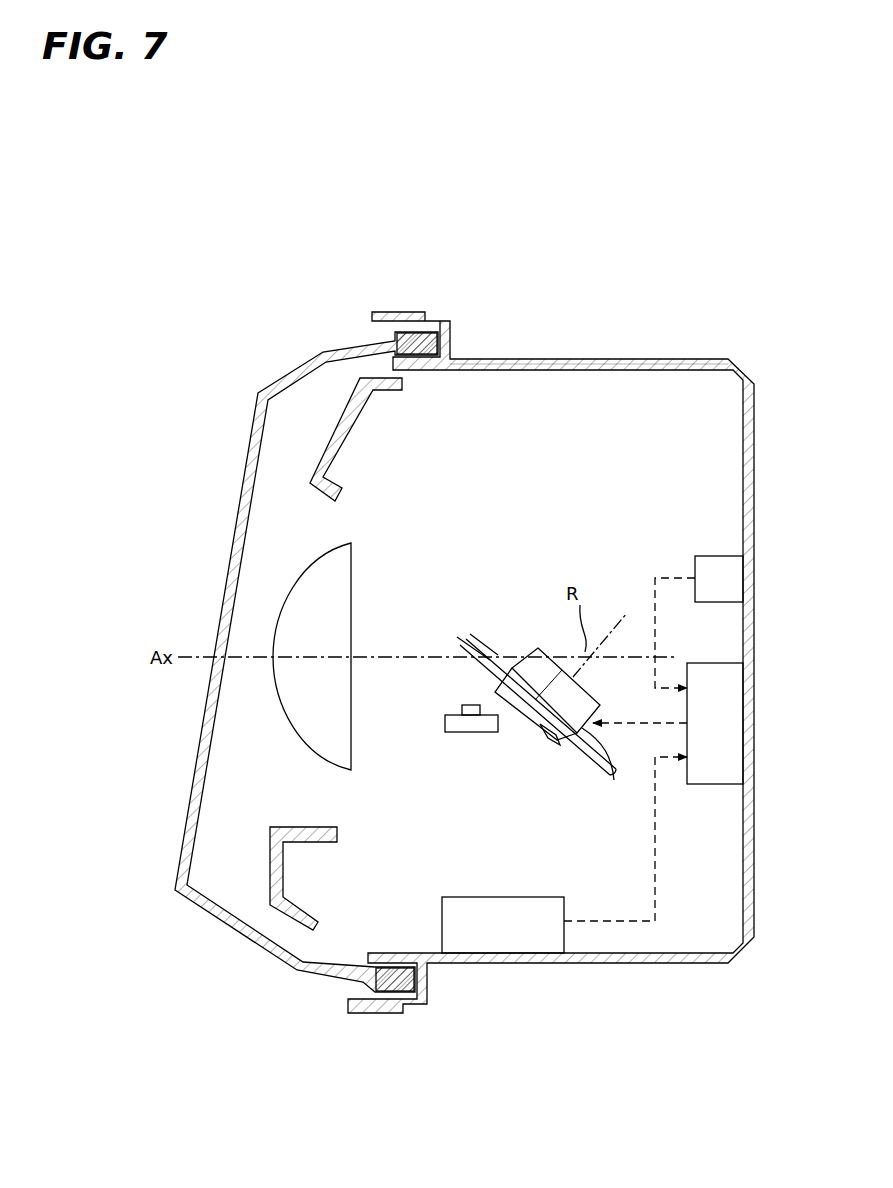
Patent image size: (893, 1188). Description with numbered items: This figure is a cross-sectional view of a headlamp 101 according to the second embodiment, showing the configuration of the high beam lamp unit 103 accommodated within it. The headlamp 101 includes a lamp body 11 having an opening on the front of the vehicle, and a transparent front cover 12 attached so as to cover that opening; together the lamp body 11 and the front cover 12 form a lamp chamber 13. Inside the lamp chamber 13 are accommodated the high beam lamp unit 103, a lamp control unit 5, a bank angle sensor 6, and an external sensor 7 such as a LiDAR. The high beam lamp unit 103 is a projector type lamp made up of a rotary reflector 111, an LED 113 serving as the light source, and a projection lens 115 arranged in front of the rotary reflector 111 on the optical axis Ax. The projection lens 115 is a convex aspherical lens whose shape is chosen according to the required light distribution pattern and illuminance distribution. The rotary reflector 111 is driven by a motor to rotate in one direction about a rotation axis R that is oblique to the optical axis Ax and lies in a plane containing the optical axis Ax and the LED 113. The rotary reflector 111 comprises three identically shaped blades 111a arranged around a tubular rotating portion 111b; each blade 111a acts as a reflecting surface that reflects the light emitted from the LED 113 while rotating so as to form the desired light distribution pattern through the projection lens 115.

The headlamp 101 is at (305, 278).
The lamp body 11 is at (683, 360).
The front cover 12 is at (303, 362).
The lamp chamber 13 is at (530, 410).
The high beam lamp unit 103 is at (292, 528).
The projection lens 115 is at (300, 578).
The rotary reflector 111 is at (545, 648).
The blade 111a is at (563, 747).
The rotating portion 111b is at (597, 770).
The LED 113 is at (473, 732).
The lamp control unit 5 is at (713, 784).
The bank angle sensor 6 is at (718, 556).
The external sensor 7 is at (482, 897).